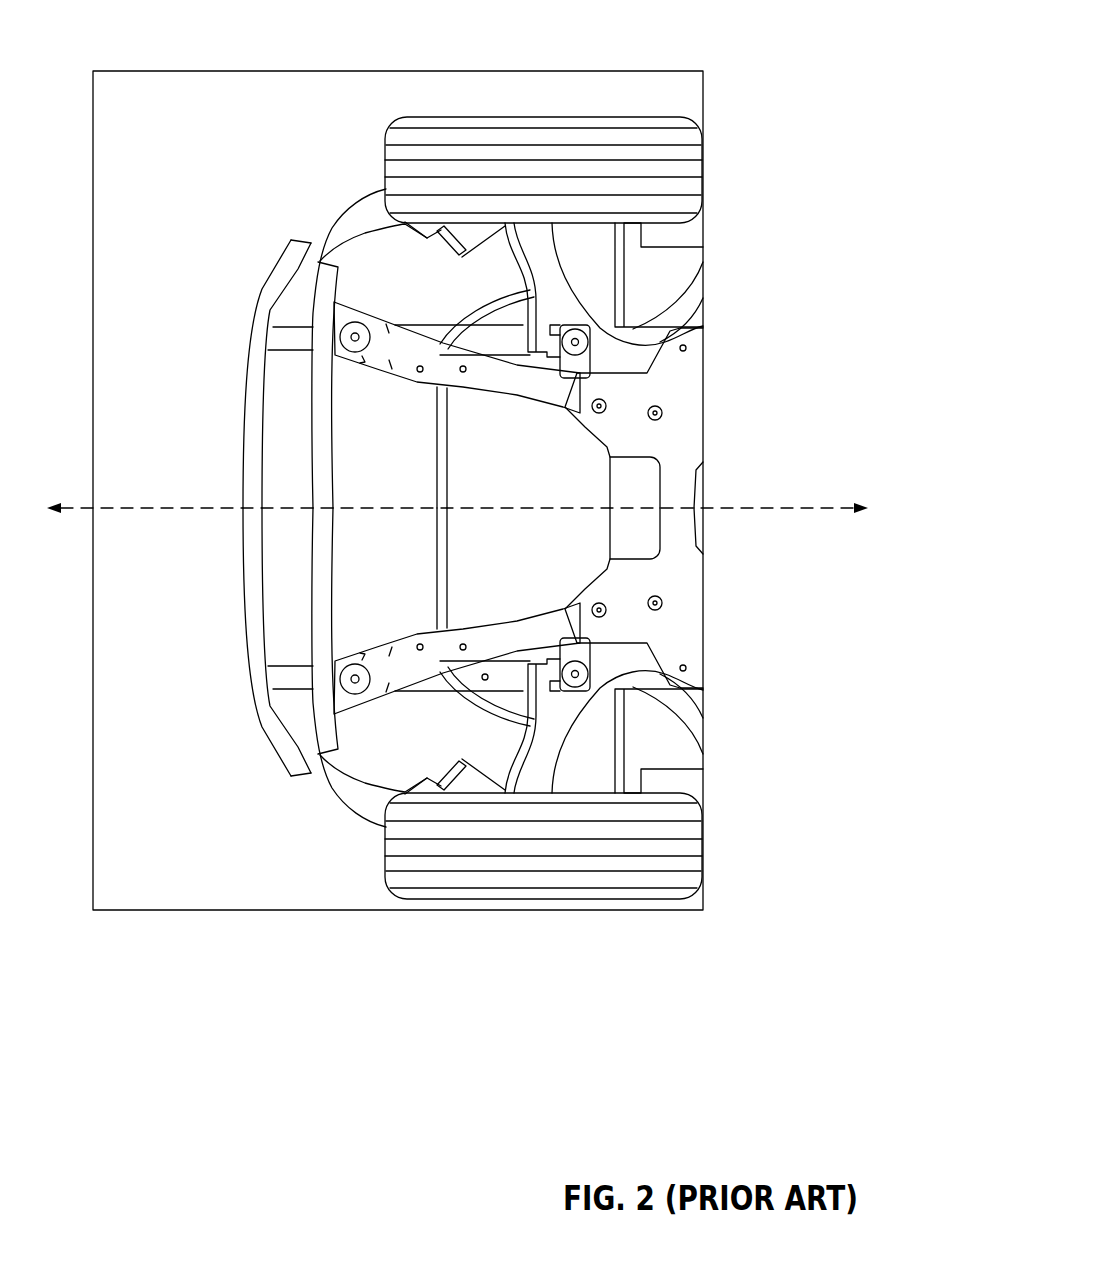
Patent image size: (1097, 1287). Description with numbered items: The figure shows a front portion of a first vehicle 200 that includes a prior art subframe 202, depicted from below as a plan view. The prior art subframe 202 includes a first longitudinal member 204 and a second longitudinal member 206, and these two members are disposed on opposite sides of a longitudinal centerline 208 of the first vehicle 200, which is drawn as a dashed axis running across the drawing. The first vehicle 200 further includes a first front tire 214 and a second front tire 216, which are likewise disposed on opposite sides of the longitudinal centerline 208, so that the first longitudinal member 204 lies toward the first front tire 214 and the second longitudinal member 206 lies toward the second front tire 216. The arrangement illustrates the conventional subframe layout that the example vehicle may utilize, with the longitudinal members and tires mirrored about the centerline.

The first vehicle 200 is at (688, 36).
The prior art subframe 202 is at (614, 414).
The first longitudinal member 204 is at (356, 305).
The second longitudinal member 206 is at (483, 622).
The longitudinal centerline 208 is at (787, 508).
The first front tire 214 is at (535, 112).
The second front tire 216 is at (531, 903).